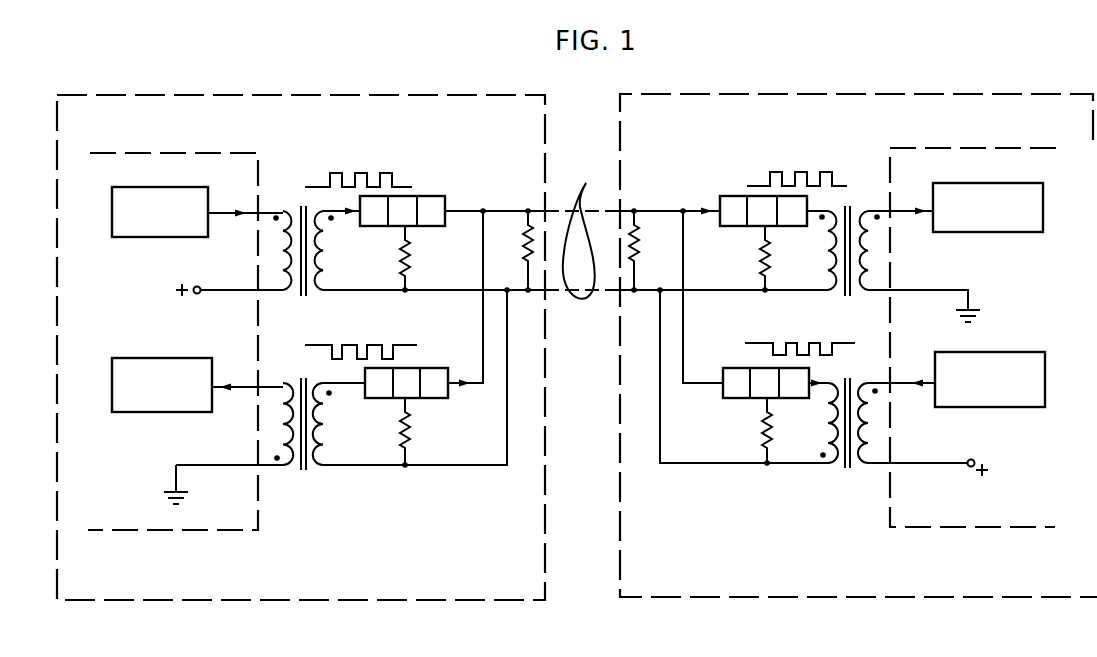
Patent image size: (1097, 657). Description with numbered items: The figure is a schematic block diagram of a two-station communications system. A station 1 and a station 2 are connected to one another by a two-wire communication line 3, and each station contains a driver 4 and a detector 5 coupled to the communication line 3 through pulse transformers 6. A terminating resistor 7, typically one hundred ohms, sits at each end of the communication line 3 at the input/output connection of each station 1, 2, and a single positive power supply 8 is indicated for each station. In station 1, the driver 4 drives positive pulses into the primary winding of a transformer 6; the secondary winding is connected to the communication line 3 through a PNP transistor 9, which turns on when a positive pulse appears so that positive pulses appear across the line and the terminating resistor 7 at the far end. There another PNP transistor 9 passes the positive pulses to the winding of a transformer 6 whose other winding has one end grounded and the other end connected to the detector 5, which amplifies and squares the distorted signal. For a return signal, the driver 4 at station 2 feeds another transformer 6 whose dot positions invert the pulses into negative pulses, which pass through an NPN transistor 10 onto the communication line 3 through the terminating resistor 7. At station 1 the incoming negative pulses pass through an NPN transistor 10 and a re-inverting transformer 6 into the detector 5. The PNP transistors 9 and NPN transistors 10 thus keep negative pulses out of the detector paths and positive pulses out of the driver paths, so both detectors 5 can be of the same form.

The station 1 is at (467, 95).
The station 2 is at (1013, 93).
The two-wire communication line 3 is at (582, 236).
The driver 4 is at (203, 192).
The detector 5 is at (198, 357).
The transformer 6 is at (286, 200).
The terminating resistor 7 is at (525, 249).
The positive power supply 8 is at (197, 286).
The PNP transistor 9 is at (442, 196).
The NPN transistor 10 is at (436, 368).